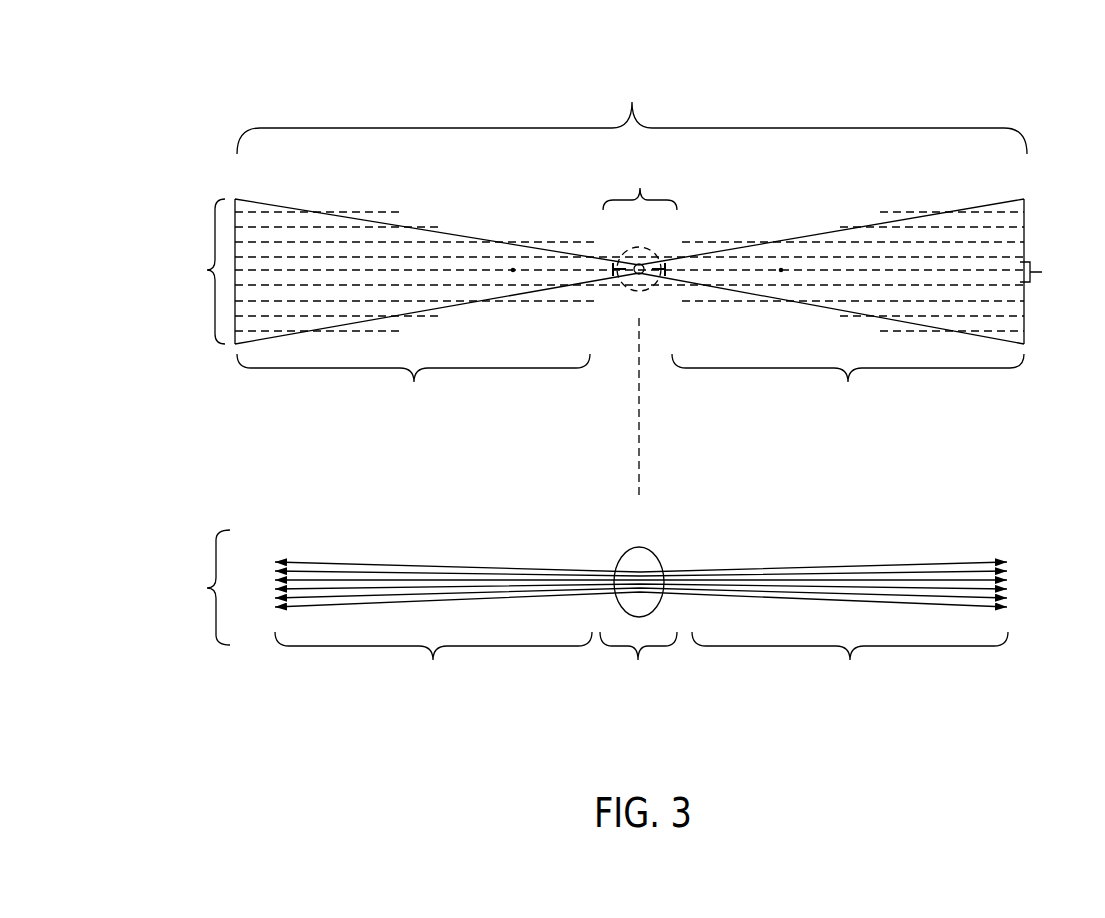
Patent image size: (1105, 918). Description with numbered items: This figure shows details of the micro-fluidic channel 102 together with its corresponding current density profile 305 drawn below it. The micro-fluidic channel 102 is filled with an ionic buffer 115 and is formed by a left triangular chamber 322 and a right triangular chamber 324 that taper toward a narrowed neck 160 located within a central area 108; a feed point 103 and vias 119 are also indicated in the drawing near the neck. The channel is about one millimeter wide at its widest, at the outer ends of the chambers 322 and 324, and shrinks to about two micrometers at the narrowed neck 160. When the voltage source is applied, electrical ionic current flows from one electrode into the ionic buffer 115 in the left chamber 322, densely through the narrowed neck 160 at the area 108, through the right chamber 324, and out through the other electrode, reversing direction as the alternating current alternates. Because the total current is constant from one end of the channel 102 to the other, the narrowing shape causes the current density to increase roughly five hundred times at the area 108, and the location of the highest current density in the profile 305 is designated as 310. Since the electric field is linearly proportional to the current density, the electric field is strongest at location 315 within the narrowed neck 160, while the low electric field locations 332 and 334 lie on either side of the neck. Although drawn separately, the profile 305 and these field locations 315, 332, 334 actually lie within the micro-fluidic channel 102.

The micro-fluidic channel 102 is at (988, 102).
The feed point 103 is at (638, 265).
The area 108 is at (666, 244).
The ionic buffer 115 is at (342, 293).
The conductive vias 119 is at (510, 266).
The narrowed neck 160 is at (640, 187).
The current density profile 305 is at (568, 585).
The highest current density location 310 is at (627, 563).
The highest electric field location 315 is at (638, 684).
The left triangular chamber 322 is at (413, 382).
The right triangular chamber 324 is at (848, 382).
The low electric field location 332 is at (433, 659).
The low electric field location 334 is at (850, 659).